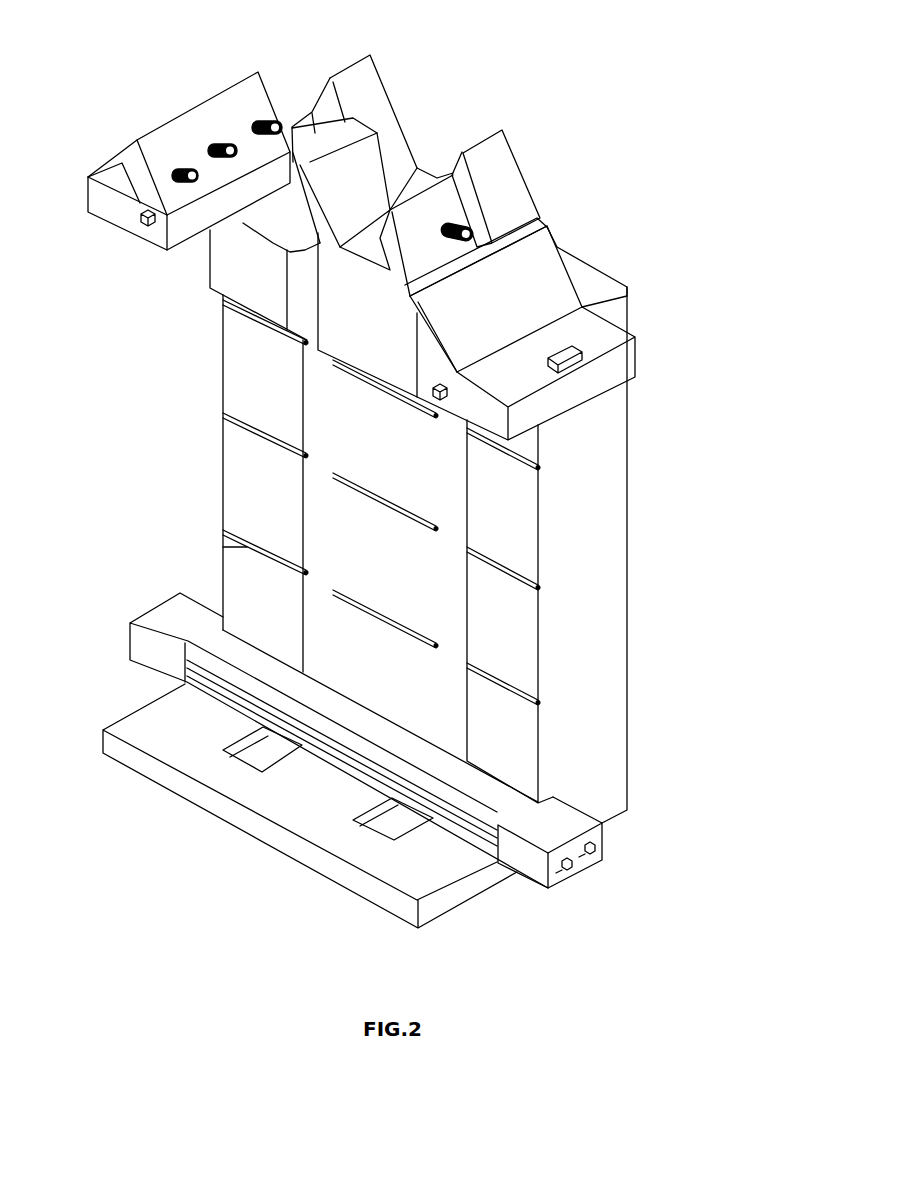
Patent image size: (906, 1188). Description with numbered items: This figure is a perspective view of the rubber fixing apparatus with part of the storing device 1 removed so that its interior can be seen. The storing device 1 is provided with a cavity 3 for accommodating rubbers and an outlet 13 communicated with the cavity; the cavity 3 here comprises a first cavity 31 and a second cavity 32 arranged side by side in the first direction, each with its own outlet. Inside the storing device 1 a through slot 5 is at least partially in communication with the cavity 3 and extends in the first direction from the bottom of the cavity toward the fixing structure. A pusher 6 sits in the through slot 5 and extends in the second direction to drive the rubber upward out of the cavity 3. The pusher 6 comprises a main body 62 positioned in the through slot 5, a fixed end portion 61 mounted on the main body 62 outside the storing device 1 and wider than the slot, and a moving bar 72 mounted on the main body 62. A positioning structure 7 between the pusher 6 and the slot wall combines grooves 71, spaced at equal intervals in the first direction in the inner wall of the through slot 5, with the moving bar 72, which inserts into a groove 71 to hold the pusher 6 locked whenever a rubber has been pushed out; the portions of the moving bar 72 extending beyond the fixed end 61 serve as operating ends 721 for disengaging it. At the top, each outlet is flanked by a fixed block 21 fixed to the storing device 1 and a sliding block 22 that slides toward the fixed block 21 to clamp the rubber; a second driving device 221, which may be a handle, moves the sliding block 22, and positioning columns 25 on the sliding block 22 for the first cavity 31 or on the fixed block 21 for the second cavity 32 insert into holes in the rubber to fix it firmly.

The storing device 1 is at (590, 500).
The cavity 3 is at (424, 502).
The first cavity 31 is at (317, 500).
The second cavity 32 is at (452, 587).
The through slot 5 is at (262, 368).
The pusher 6 is at (408, 760).
The fixed end portion 61 is at (632, 816).
The main body 62 is at (337, 703).
The positioning structure 7 is at (268, 721).
The grooves 71 is at (223, 547).
The moving bar 72 is at (340, 760).
The outlet 13 is at (320, 237).
The fixed block 21 is at (520, 247).
The sliding block 22 is at (185, 135).
The positioning column 25 is at (235, 142).
The second driving device 221 is at (573, 360).
The operating end 721 is at (600, 862).